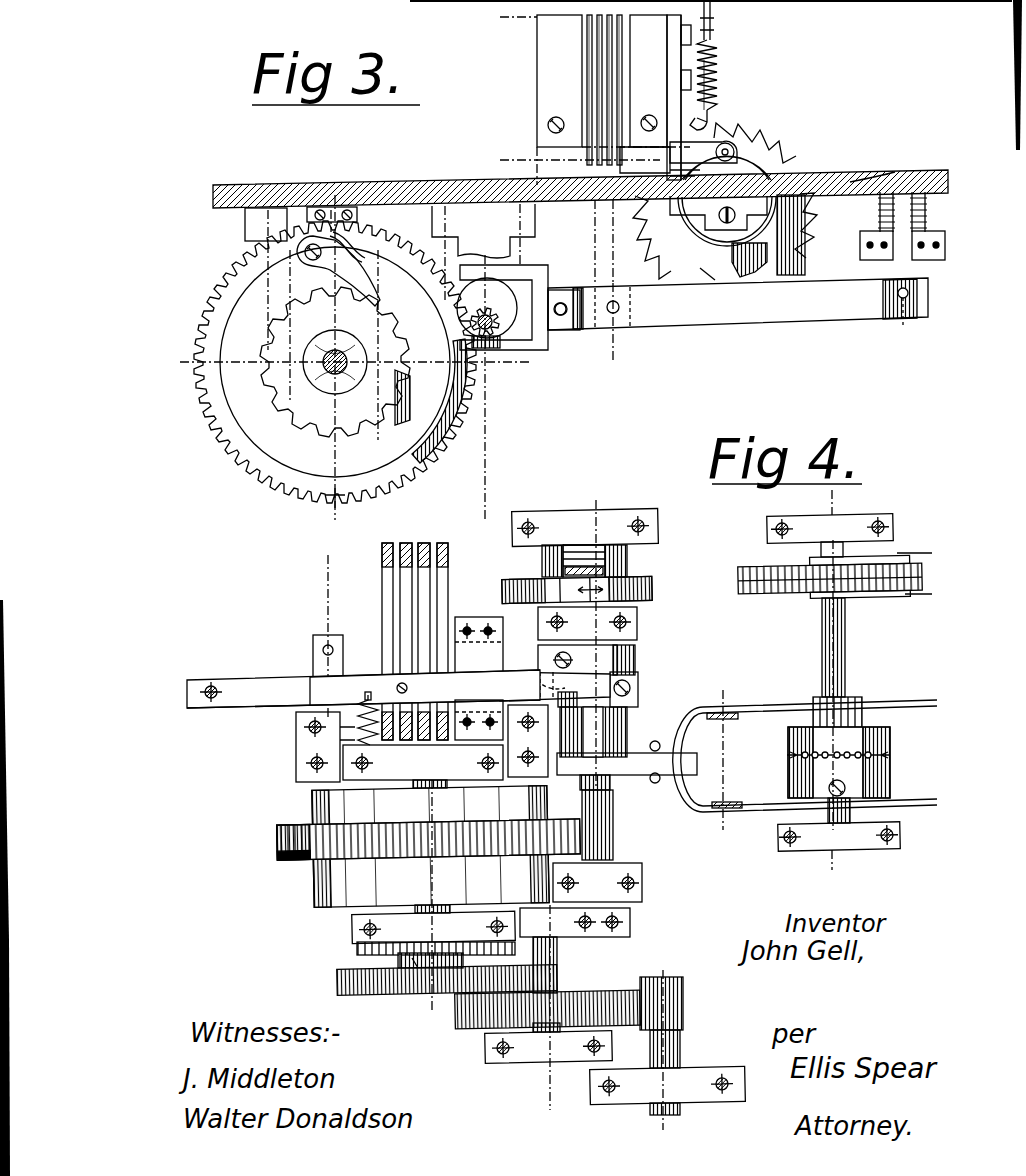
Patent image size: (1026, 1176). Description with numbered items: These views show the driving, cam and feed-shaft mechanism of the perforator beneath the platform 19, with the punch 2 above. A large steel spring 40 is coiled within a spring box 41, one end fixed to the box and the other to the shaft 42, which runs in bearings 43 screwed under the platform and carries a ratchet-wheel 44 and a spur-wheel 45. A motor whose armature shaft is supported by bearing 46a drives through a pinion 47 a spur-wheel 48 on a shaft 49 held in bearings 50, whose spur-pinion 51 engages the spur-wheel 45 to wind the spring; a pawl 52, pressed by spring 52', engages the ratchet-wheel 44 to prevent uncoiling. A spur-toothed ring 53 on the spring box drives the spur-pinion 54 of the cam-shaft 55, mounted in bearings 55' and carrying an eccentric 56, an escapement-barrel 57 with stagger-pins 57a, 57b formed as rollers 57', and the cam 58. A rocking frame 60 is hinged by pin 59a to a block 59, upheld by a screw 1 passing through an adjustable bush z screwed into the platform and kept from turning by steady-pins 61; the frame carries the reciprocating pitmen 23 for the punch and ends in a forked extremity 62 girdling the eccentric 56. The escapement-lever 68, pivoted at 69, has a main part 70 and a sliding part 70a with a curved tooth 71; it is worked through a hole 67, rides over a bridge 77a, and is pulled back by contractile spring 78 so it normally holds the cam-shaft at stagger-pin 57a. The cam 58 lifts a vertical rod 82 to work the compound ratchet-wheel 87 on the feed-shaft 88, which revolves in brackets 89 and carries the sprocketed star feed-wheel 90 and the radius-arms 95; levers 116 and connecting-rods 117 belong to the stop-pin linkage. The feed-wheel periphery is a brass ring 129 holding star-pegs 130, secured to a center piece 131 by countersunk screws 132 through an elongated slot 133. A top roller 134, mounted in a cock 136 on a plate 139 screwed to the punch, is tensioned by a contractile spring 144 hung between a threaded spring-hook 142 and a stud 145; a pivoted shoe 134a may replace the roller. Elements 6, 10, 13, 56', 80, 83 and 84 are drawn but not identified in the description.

In FIG. 3, the screw 1 is at (881, 166).
In FIG. 3, the punch 2 is at (645, 140).
In FIG. 4, the lever 6 is at (363, 720).
In FIG. 3, the rods 10 is at (618, 25).
In FIG. 3, the frame block 13 is at (586, 58).
In FIG. 3, the platform 19 is at (490, 182).
In FIG. 4, the reciprocating pitmen 23 is at (733, 717).
In FIG. 3, the steel spring 40 is at (455, 422).
In FIG. 3, the spring box 41 is at (292, 440).
In FIG. 4, the spring box 41 is at (430, 847).
In FIG. 3, the shaft 42 is at (343, 350).
In FIG. 4, the shaft 42 is at (434, 895).
In FIG. 3, the bearings 43 is at (368, 216).
In FIG. 4, the bearings 43 is at (352, 924).
In FIG. 3, the ratchet-wheel 44 is at (306, 385).
In FIG. 4, the ratchet-wheel 44 is at (357, 948).
In FIG. 4, the spur-wheel 45 is at (360, 992).
In FIG. 4, the bearing 46a is at (712, 1102).
In FIG. 4, the pinion 47 is at (683, 1022).
In FIG. 4, the spur-wheel 48 is at (606, 988).
In FIG. 4, the shaft 49 is at (554, 1045).
In FIG. 4, the bearings 50 is at (562, 924).
In FIG. 4, the spur-pinion 51 is at (558, 966).
In FIG. 3, the pawl 52 is at (335, 271).
In FIG. 4, the pawl 52 is at (415, 986).
In FIG. 3, the spring 52' is at (324, 201).
In FIG. 3, the spur-toothed ring 53 is at (405, 500).
In FIG. 4, the spur-toothed ring 53 is at (480, 805).
In FIG. 3, the spur-pinion 54 is at (489, 342).
In FIG. 4, the spur-pinion 54 is at (612, 832).
In FIG. 3, the cam-shaft 55 is at (593, 280).
In FIG. 4, the cam-shaft 55 is at (627, 652).
In FIG. 3, the bearings 55' is at (483, 252).
In FIG. 3, the eccentric 56 is at (523, 297).
In FIG. 4, the eccentric 56 is at (606, 797).
In FIG. 4, the bearing bar 56' is at (587, 623).
In FIG. 4, the escapement-barrel 57 is at (600, 658).
In FIG. 4, the stagger-pin 57a is at (640, 686).
In FIG. 4, the stagger-pin 57b is at (574, 662).
In FIG. 4, the rollers 57' is at (588, 690).
In FIG. 4, the cam 58 is at (652, 592).
In FIG. 3, the block 59 is at (905, 299).
In FIG. 3, the pin 59a is at (893, 324).
In FIG. 3, the rocking frame 60 is at (804, 300).
In FIG. 4, the rocking frame 60 is at (768, 797).
In FIG. 3, the steady-pins 61 is at (882, 226).
In FIG. 3, the forked extremity 62 is at (536, 352).
In FIG. 4, the forked extremity 62 is at (577, 780).
In FIG. 4, the hole 67 is at (333, 648).
In FIG. 4, the escapement-lever 68 is at (306, 680).
In FIG. 4, the pivot 69 is at (214, 685).
In FIG. 4, the main part of escapement-lever 70 is at (363, 689).
In FIG. 4, the sliding part of escapement-lever 70a is at (425, 687).
In FIG. 4, the curved tooth 71 is at (537, 676).
In FIG. 4, the bridge 77a is at (482, 610).
In FIG. 4, the contractile spring 78 is at (375, 746).
In FIG. 4, the block 80 is at (600, 565).
In FIG. 4, the vertical rod 82 is at (573, 568).
In FIG. 4, the hatched blocks 83 is at (570, 548).
In FIG. 4, the bar 84 is at (614, 530).
In FIG. 3, the compound ratchet-wheel 87 is at (710, 280).
In FIG. 4, the compound ratchet-wheel 87 is at (890, 568).
In FIG. 3, the feed-shaft 88 is at (775, 180).
In FIG. 4, the feed-shaft 88 is at (841, 677).
In FIG. 4, the brackets 89 is at (884, 517).
In FIG. 3, the sprocketed star feed-wheel 90 is at (742, 246).
In FIG. 4, the sprocketed star feed-wheel 90 is at (891, 780).
In FIG. 4, the radius-arms 95 is at (925, 598).
In FIG. 4, the levers 116 is at (452, 532).
In FIG. 4, the connecting-rods 117 is at (382, 570).
In FIG. 3, the brass ring 129 is at (733, 258).
In FIG. 4, the brass ring 129 is at (892, 746).
In FIG. 3, the star-pegs 130 is at (678, 232).
In FIG. 4, the star-pegs 130 is at (787, 757).
In FIG. 3, the center piece 131 is at (788, 272).
In FIG. 4, the countersunk screws 132 is at (846, 792).
In FIG. 4, the elongated slot 133 is at (830, 806).
In FIG. 3, the top roller 134 is at (779, 143).
In FIG. 3, the pivoted shoe 134a is at (673, 162).
In FIG. 3, the cock 136 is at (737, 143).
In FIG. 3, the plate 139 is at (722, 62).
In FIG. 3, the threaded spring-hook 142 is at (714, 18).
In FIG. 3, the contractile spring 144 is at (728, 72).
In FIG. 3, the stud 145 is at (712, 118).
In FIG. 3, the adjustable bush z is at (843, 244).